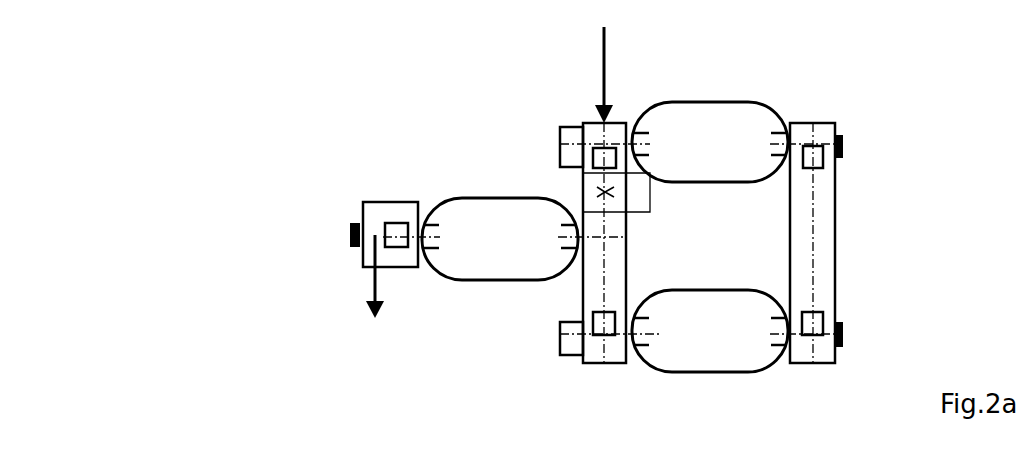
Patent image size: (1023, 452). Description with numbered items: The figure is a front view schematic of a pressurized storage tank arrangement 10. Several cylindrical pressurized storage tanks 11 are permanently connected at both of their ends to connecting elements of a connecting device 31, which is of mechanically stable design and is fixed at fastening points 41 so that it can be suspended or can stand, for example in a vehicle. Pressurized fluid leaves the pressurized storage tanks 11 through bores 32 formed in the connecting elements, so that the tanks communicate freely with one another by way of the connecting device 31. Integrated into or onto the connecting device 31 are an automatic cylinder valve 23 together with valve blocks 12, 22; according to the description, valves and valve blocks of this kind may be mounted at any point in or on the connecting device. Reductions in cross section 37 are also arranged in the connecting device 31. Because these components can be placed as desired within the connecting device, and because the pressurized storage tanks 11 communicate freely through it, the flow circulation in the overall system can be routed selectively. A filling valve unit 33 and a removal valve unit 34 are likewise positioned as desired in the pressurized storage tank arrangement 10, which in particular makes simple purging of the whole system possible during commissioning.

The pressurized storage tank arrangement 10 is at (237, 311).
The pressurized storage tank 11 is at (605, 237).
The valve block 12 is at (397, 202).
The valve block 22 is at (572, 122).
The automatic cylinder valve 23 is at (383, 213).
The connecting device 31 is at (789, 267).
The bore 32 is at (617, 212).
The filling valve unit 33 is at (606, 58).
The removal valve unit 34 is at (372, 290).
The reduction in cross section 37 is at (590, 192).
The fastening point 41 is at (590, 157).